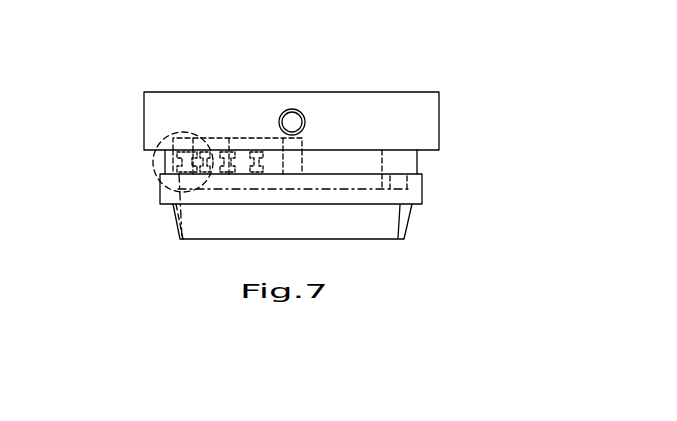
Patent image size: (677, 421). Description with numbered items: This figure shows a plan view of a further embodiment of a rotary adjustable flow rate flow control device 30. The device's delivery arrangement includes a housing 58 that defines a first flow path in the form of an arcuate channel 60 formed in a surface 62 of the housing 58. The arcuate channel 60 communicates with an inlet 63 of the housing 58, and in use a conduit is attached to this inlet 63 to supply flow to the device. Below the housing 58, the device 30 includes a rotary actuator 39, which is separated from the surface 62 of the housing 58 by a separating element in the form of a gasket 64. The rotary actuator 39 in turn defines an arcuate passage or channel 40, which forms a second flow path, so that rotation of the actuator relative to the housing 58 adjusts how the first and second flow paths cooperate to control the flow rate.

The rotary adjustable flow rate flow control device 30 is at (537, 127).
The rotary actuator 39 is at (423, 197).
The arcuate passage or channel 40 is at (180, 222).
The housing 58 is at (439, 103).
The arcuate channel 60 is at (200, 132).
The surface of the housing 62 is at (162, 167).
The inlet 63 is at (294, 109).
The gasket 64 is at (422, 165).